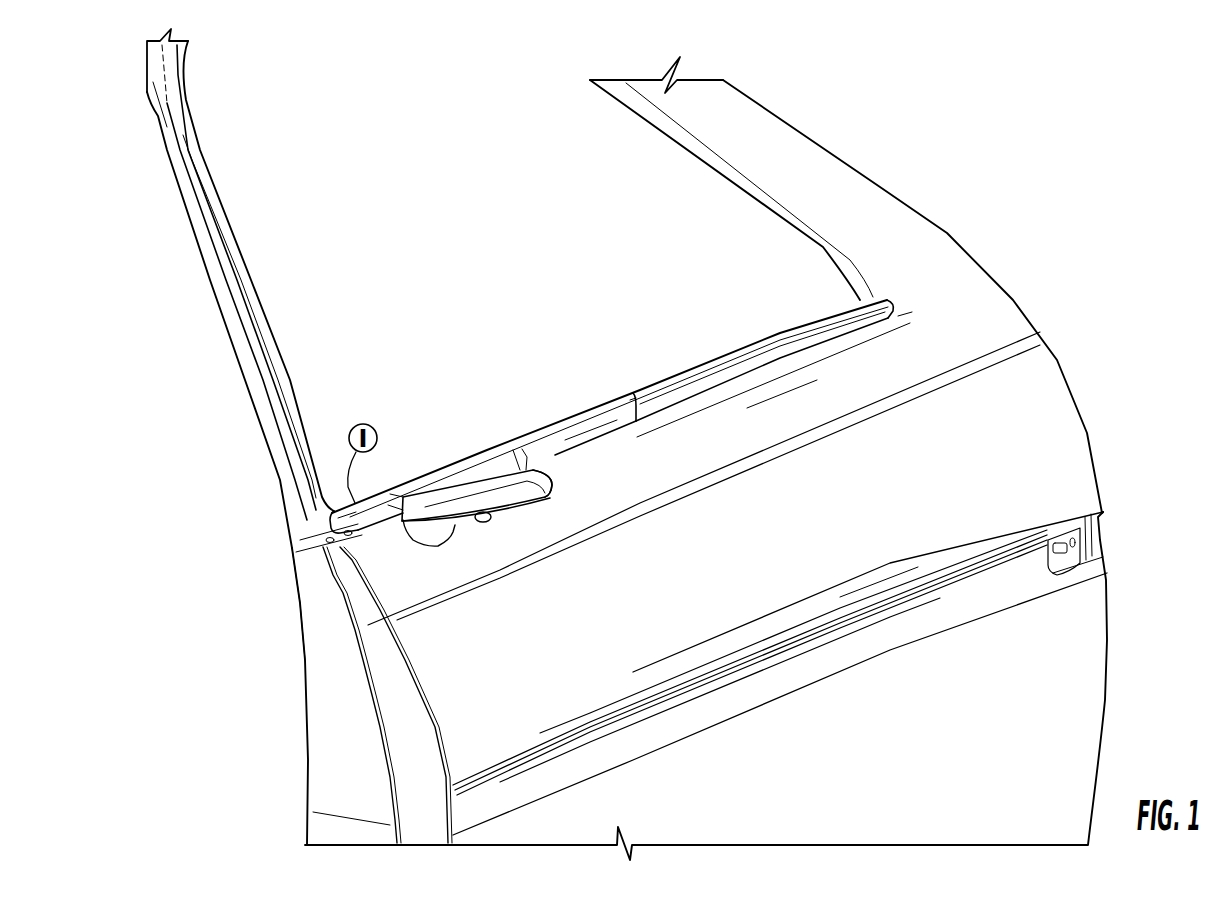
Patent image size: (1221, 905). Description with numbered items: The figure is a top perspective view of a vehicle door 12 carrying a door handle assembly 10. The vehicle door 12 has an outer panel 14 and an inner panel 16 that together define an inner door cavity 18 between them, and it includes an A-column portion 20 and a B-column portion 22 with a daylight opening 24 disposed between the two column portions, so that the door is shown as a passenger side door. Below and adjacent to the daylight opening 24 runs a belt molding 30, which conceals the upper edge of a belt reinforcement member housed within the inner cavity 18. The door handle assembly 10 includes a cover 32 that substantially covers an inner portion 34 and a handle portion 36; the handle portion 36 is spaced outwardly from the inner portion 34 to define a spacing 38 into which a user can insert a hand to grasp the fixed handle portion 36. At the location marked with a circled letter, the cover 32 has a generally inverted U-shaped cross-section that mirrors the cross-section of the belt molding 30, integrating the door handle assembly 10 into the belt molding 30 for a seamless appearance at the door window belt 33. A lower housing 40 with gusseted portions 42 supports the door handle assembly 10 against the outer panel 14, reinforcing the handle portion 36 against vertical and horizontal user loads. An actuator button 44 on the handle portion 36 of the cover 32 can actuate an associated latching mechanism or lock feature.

The door handle assembly 10 is at (470, 430).
The vehicle door 12 is at (880, 130).
The outer panel 14 is at (1040, 398).
The inner panel 16 is at (305, 665).
The inner door cavity 18 is at (425, 725).
The A-column portion 20 is at (872, 194).
The B-column portion 22 is at (283, 422).
The daylight opening 24 is at (557, 288).
The belt molding 30 is at (740, 370).
The cover 32 is at (380, 492).
The door window belt 33 is at (643, 380).
The inner portion 34 is at (577, 413).
The handle portion 36 is at (542, 497).
The spacing 38 is at (498, 478).
The lower housing 40 is at (452, 533).
The gusseted portions 42 is at (423, 533).
The actuator button 44 is at (485, 518).